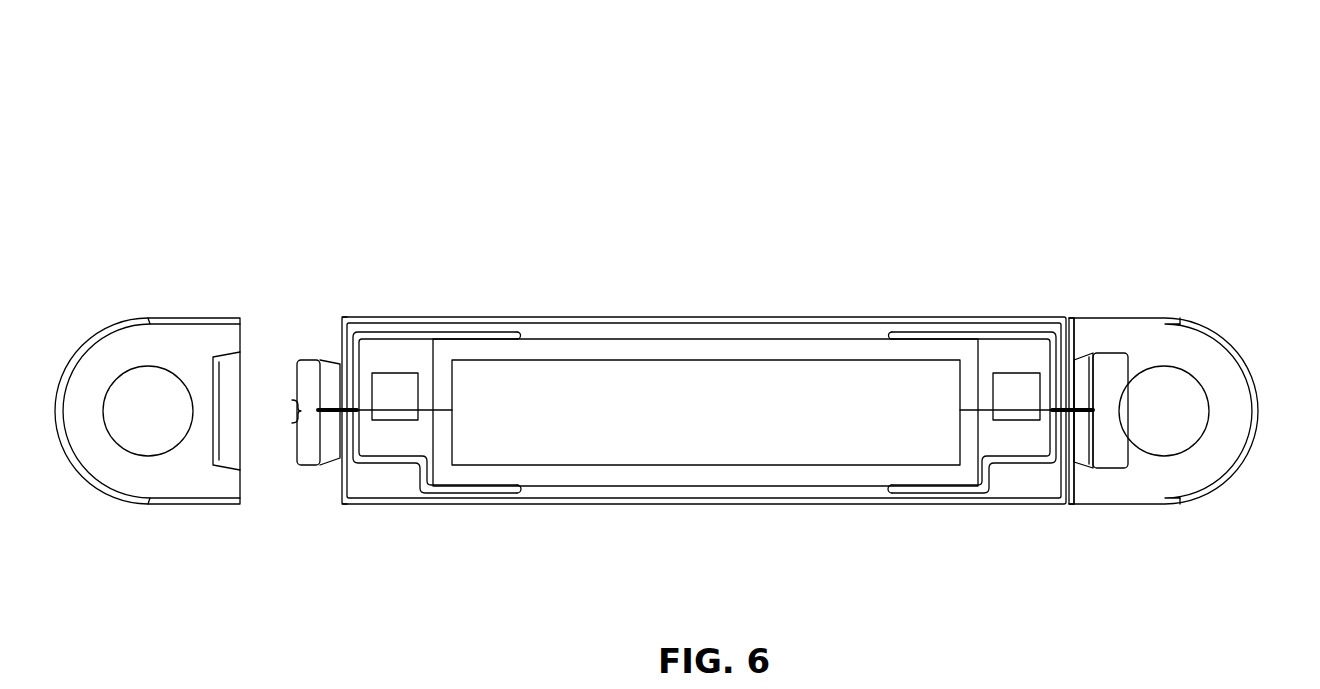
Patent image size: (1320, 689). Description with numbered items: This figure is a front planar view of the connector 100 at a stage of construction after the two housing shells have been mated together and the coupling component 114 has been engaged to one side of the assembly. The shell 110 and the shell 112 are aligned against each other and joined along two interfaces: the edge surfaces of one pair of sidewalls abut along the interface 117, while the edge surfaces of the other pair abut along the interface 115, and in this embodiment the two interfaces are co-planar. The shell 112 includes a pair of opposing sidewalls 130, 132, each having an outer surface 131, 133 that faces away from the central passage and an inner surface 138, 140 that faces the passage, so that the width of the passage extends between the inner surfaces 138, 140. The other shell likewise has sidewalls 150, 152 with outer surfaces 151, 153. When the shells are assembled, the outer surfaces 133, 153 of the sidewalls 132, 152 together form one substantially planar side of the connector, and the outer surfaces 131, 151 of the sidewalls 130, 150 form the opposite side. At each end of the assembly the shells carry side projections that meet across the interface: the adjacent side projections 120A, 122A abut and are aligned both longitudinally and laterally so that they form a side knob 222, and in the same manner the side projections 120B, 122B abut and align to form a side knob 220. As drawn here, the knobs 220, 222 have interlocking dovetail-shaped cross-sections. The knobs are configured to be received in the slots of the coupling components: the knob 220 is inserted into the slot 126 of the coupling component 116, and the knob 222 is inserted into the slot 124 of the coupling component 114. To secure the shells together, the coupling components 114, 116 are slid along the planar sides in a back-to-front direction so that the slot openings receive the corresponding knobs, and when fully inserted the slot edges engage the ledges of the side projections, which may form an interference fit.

The connector 100 is at (787, 108).
The shell 110 is at (612, 317).
The shell 112 is at (607, 504).
The coupling component 114 is at (1215, 345).
The interface 115 is at (1098, 398).
The coupling component 116 is at (122, 322).
The interface 117 is at (313, 408).
The side projection 120A is at (1087, 375).
The side projection 120B is at (320, 357).
The side projection 122A is at (1080, 450).
The side projection 122B is at (310, 464).
The slot 124 is at (1103, 472).
The slot 126 is at (255, 447).
The sidewall 130 is at (360, 397).
The outer surface 131 is at (330, 487).
The sidewall 132 is at (1058, 425).
The outer surface 133 is at (1082, 483).
The inner surface 138 is at (375, 442).
The inner surface 140 is at (1032, 442).
The sidewall 150 is at (348, 426).
The outer surface 151 is at (332, 328).
The sidewall 152 is at (1060, 400).
The outer surface 153 is at (1082, 340).
The side knob 220 is at (273, 409).
The side knob 222 is at (1134, 400).